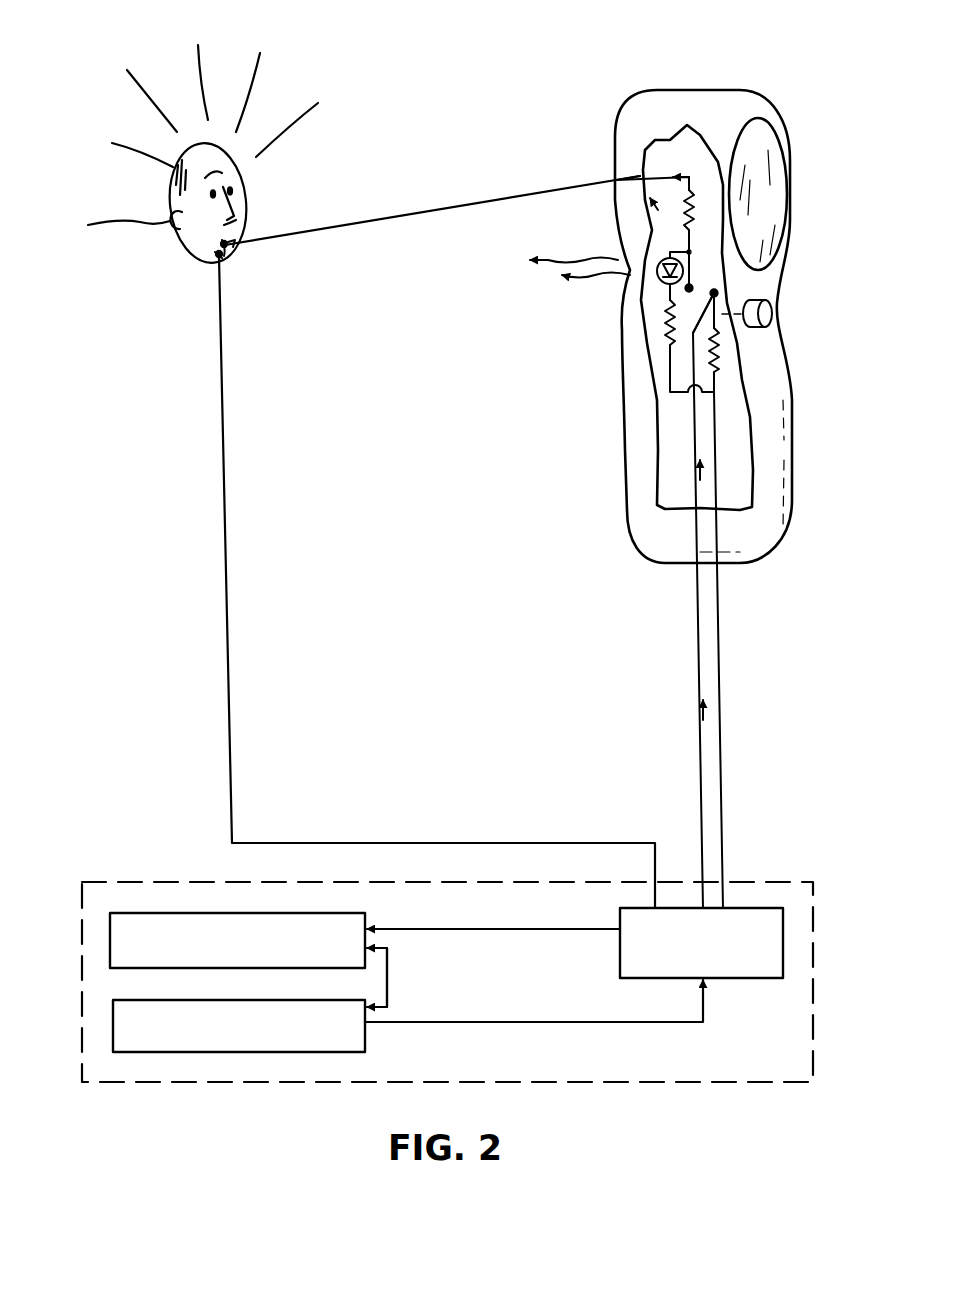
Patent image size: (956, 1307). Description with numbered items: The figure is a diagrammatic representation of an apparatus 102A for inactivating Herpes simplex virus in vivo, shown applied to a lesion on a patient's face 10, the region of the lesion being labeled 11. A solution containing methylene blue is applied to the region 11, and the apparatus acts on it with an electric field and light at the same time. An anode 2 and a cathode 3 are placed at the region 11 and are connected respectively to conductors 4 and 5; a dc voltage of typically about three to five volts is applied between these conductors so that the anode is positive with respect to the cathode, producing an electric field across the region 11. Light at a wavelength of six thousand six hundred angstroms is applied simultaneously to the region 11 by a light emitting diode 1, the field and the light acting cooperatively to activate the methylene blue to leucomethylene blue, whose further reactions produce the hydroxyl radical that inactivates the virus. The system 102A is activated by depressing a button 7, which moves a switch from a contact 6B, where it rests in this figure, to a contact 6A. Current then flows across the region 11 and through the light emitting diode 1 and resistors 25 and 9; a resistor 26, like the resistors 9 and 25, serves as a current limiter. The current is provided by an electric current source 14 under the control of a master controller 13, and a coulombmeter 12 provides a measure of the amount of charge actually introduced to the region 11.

The light emitting diode 1 is at (662, 287).
The anode 2 is at (188, 281).
The cathode 3 is at (240, 237).
The conductor 4 is at (227, 442).
The conductor 5 is at (466, 207).
The contact 6A is at (695, 280).
The contact 6B is at (714, 293).
The button 7 is at (773, 316).
The resistor 9 is at (672, 342).
The patient's face 10 is at (200, 229).
The region of the lesion 11 is at (236, 254).
The coulombmeter 12 is at (370, 917).
The master controller 13 is at (365, 1046).
The electric current source 14 is at (648, 983).
The resistor 25 is at (695, 228).
The resistor 26 is at (717, 363).
The apparatus for inactivating Herpes simplex virus 102A is at (202, 617).